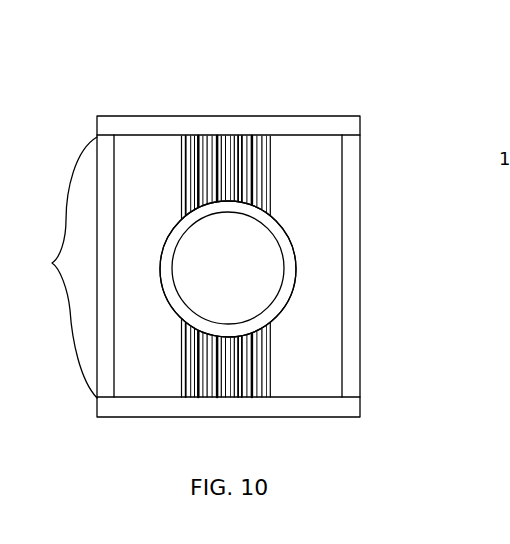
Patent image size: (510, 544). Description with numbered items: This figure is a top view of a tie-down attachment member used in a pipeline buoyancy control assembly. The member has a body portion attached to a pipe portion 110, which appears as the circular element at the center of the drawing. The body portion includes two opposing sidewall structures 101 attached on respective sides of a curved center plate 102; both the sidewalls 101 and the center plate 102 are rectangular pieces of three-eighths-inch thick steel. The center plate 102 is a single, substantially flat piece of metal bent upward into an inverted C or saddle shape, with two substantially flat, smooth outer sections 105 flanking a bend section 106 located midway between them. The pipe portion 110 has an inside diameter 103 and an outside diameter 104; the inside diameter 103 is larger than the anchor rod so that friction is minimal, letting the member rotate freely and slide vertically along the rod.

The sidewall structure 101 is at (300, 127).
The center plate 102 is at (187, 266).
The inside diameter 103 is at (172, 270).
The outside diameter 104 is at (160, 280).
The outer section 105 is at (136, 156).
The bend section 106 is at (244, 363).
The pipe portion 110 is at (297, 258).